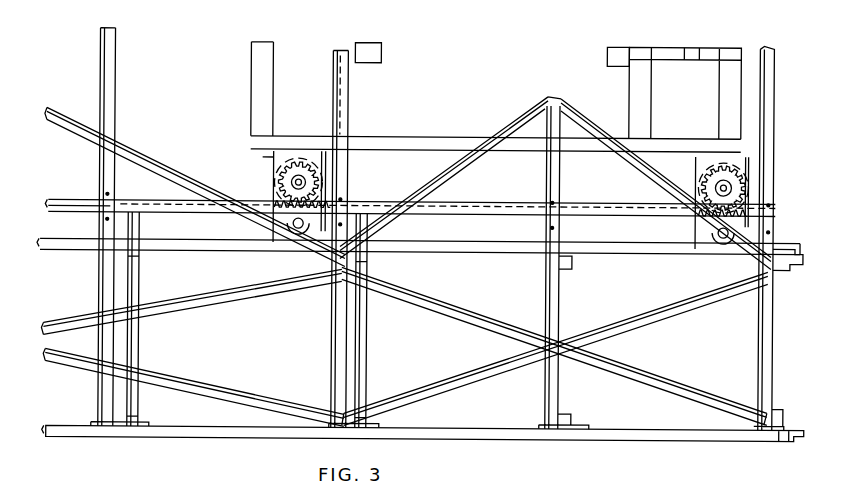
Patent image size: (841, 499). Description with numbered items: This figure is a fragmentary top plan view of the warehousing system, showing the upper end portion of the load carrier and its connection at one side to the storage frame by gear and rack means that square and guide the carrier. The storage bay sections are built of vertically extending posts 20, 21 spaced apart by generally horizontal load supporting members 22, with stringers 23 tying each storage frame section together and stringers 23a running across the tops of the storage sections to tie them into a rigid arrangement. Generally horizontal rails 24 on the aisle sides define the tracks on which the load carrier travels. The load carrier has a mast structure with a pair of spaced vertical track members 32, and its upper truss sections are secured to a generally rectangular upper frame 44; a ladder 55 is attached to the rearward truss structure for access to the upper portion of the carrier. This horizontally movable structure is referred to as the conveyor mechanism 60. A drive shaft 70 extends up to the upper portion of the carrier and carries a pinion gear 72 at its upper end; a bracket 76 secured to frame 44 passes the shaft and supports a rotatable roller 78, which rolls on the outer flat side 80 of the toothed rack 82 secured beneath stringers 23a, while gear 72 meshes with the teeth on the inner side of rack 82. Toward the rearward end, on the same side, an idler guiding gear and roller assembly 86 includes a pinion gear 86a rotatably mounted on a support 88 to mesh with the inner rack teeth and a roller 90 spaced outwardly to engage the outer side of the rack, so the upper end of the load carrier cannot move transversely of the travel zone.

The vertically extending posts 20 is at (125, 258).
The vertically extending posts 21 is at (130, 418).
The load supporting members 22 is at (135, 336).
The stringers 23 is at (472, 366).
The stringers 23a is at (143, 48).
The rails 24 is at (454, 260).
The track members 32 is at (380, 52).
The frame 44 is at (743, 46).
The ladder 55 is at (652, 46).
The conveyor mechanism 60 is at (250, 52).
The drive shaft 70 is at (298, 180).
The pinion gear 72 is at (278, 182).
The bracket 76 is at (273, 158).
The roller 78 is at (353, 202).
The flat side 80 is at (222, 218).
The toothed rack 82 is at (591, 210).
The idler guiding gear and roller assembly 86 is at (761, 193).
The pinion gear 86a is at (738, 176).
The support 88 is at (740, 162).
The roller 90 is at (703, 252).